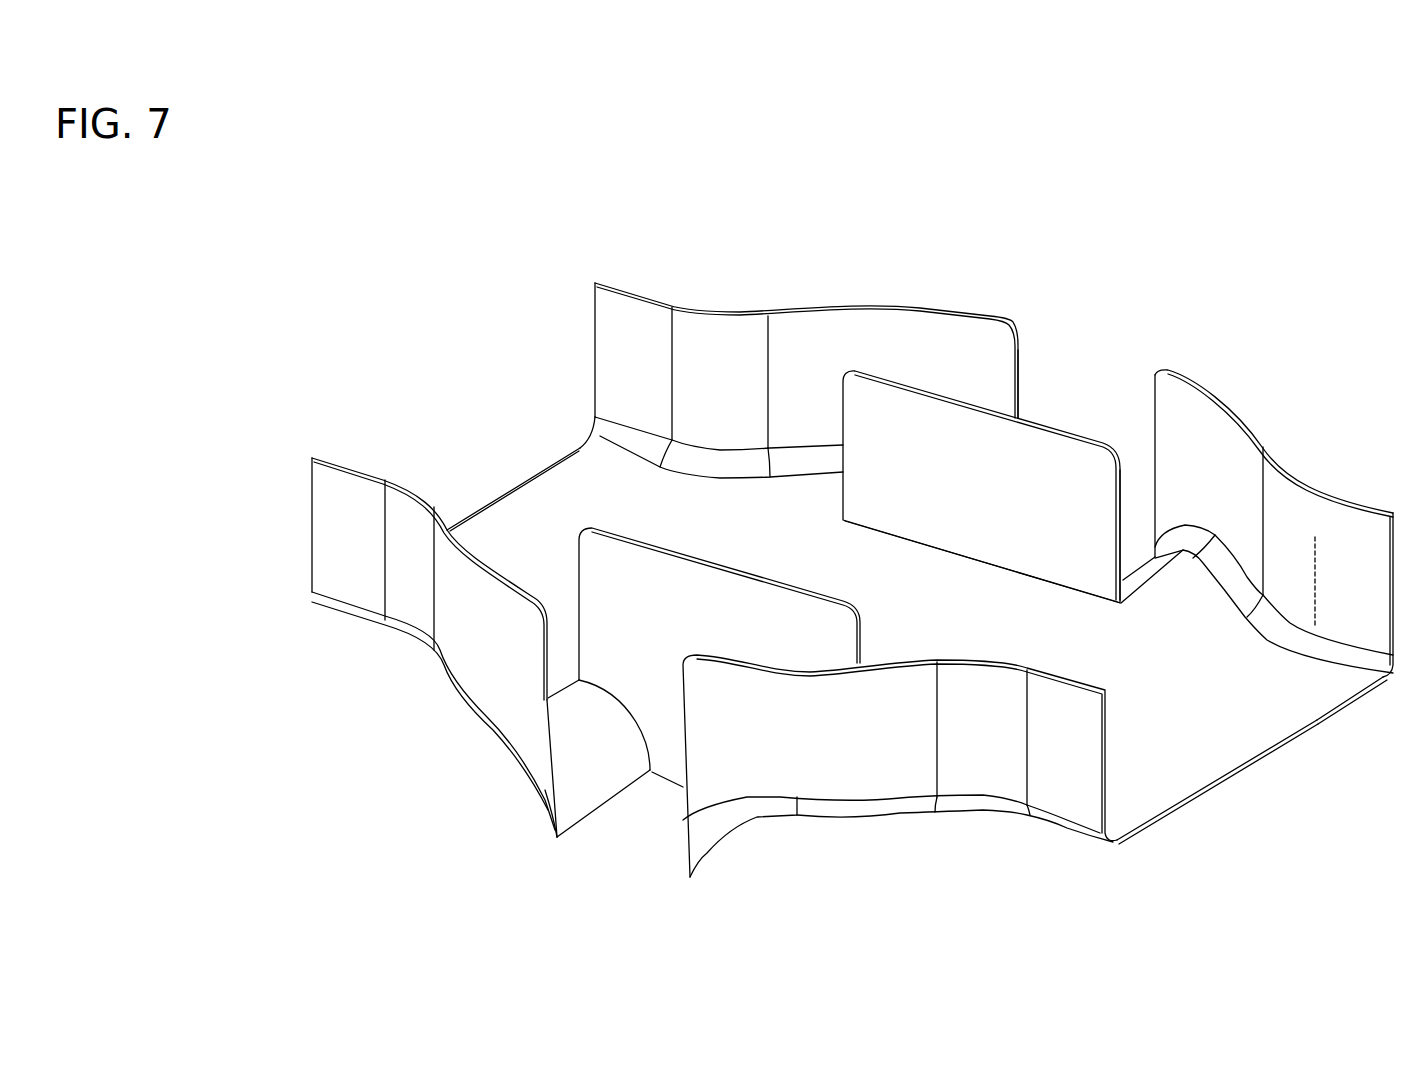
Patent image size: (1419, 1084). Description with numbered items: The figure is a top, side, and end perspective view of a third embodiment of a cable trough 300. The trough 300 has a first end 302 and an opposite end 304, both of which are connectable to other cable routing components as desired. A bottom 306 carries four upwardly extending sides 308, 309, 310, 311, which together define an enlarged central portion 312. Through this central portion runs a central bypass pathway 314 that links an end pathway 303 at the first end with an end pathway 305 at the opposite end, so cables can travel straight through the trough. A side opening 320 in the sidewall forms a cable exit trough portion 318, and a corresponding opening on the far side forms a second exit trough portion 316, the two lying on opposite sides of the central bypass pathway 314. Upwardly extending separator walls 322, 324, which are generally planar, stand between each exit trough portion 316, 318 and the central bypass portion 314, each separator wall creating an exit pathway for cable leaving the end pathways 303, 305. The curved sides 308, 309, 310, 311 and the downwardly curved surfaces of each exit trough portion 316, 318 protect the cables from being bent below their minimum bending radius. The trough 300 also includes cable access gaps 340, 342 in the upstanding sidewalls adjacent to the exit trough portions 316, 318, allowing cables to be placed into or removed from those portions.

The trough 300 is at (512, 239).
The first end 302 is at (492, 497).
The end pathway 303 is at (614, 508).
The opposite end 304 is at (1240, 770).
The end pathway 305 is at (1225, 734).
The bottom 306 is at (1115, 668).
The side 308 is at (1237, 418).
The side 309 is at (902, 308).
The side 310 is at (892, 668).
The side 311 is at (516, 596).
The enlarged central portion 312 is at (1197, 383).
The central bypass pathway 314 is at (870, 604).
The exit trough portion 316 is at (1065, 340).
The exit trough portion 318 is at (623, 655).
The side opening 320 is at (598, 808).
The separator wall 322 is at (1000, 484).
The separator wall 324 is at (700, 626).
The cable access gap 340 is at (1130, 372).
The cable access gap 342 is at (578, 770).